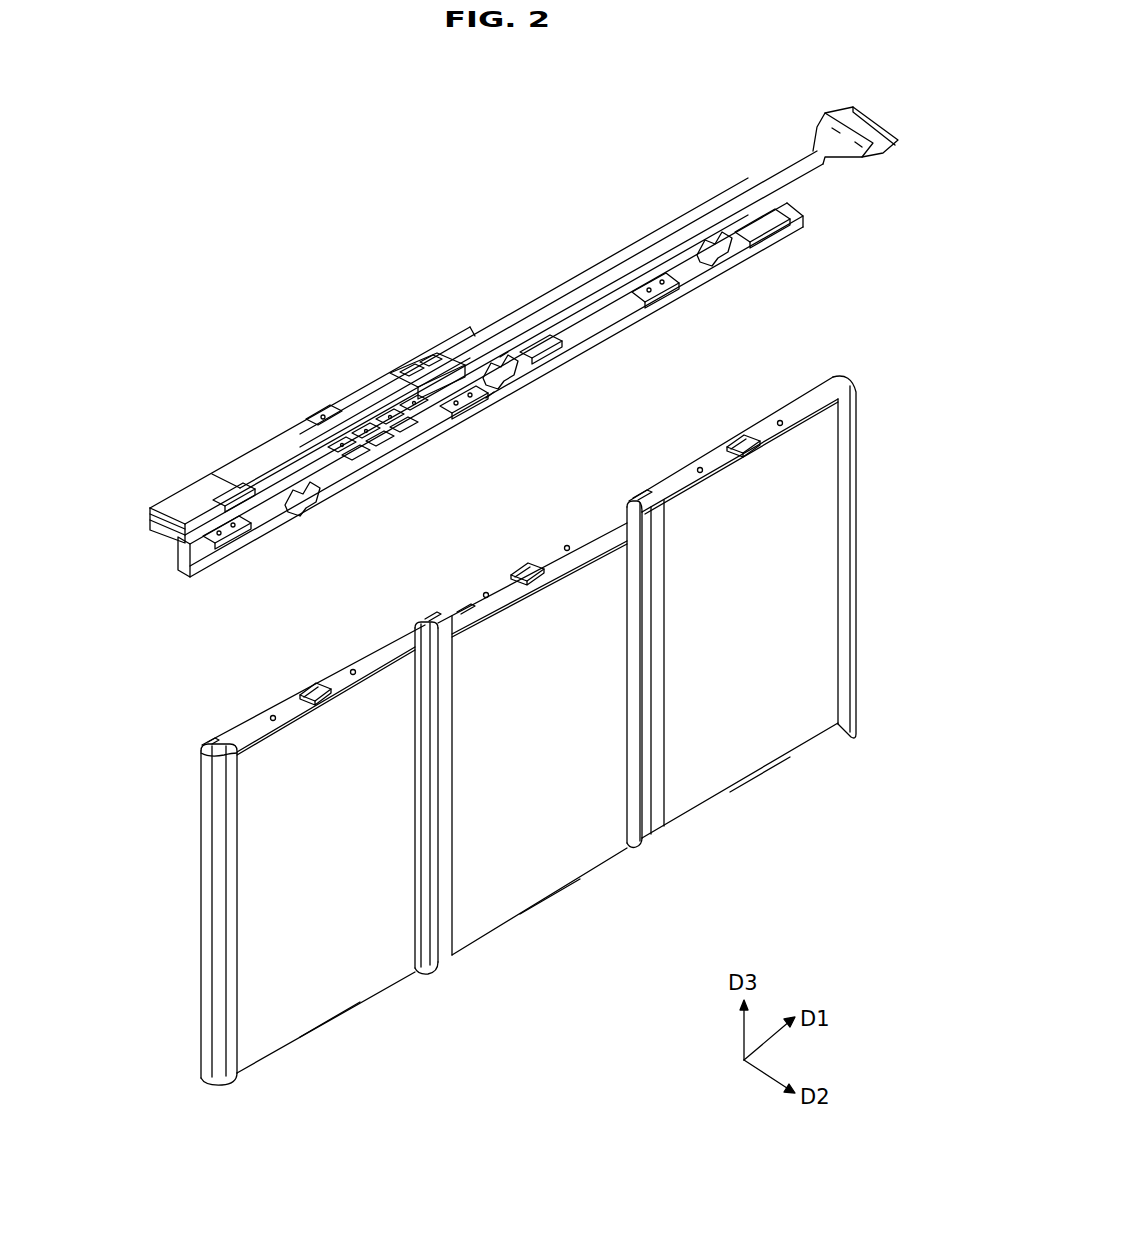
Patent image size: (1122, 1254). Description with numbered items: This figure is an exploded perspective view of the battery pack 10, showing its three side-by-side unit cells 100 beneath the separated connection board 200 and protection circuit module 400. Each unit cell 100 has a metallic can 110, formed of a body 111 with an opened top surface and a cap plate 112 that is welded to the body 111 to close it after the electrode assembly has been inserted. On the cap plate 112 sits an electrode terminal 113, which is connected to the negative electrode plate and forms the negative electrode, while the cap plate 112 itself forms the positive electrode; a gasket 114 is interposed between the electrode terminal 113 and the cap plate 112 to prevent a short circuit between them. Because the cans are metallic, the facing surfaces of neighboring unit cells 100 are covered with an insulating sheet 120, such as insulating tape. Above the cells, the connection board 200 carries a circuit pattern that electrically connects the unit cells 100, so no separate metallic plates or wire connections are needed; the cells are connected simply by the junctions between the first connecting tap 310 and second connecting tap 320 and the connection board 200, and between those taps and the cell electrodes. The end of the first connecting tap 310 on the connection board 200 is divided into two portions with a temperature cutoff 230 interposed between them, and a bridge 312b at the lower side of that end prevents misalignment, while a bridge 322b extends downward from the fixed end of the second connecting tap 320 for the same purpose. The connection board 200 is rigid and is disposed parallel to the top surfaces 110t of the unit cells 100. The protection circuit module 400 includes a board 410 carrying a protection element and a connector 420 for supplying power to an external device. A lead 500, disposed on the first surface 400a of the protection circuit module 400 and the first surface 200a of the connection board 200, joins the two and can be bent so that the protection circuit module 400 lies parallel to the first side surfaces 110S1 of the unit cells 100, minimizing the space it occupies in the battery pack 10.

The battery pack 10 is at (672, 97).
The unit cell 100 is at (792, 762).
The can 110 is at (138, 795).
The body 111 is at (265, 885).
The cap plate 112 is at (204, 749).
The top surface 110t is at (665, 478).
The first side surface 110S1 is at (718, 775).
The electrode terminal 113 is at (740, 441).
The gasket 114 is at (753, 437).
The insulating sheet 120 is at (850, 725).
The connection board 200 is at (702, 238).
The first surface of the connection board 200a is at (595, 315).
The temperature cutoff 230 is at (535, 338).
The first connecting tap 310 is at (735, 262).
The bridge 312b is at (500, 355).
The second connecting tap 320 is at (690, 300).
The bridge 322b is at (490, 400).
The protection circuit module 400 is at (262, 425).
The first surface of the protection circuit module 400a is at (324, 415).
The board 410 is at (150, 518).
The connector 420 is at (815, 135).
The lead 500 is at (408, 400).